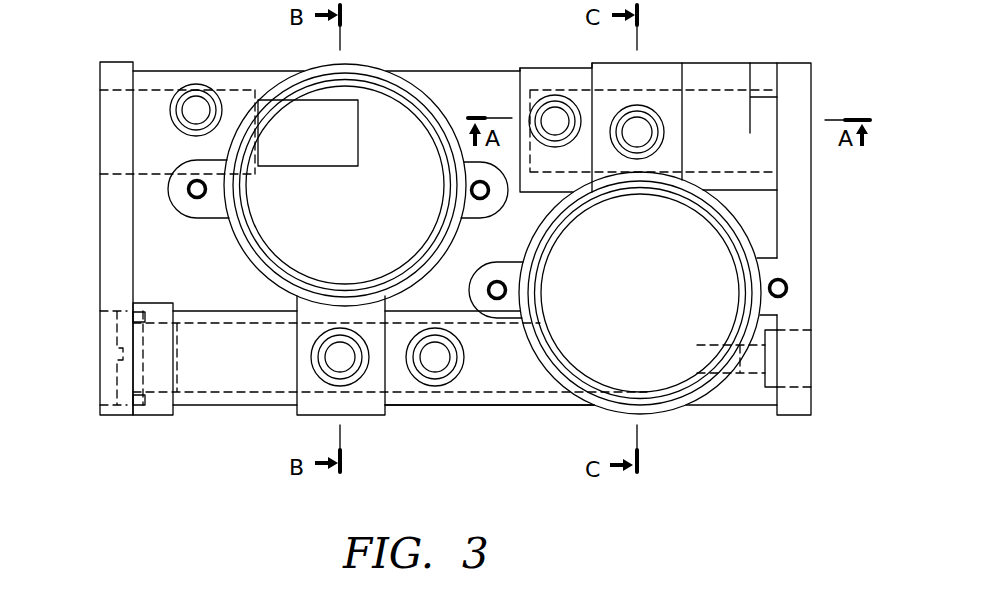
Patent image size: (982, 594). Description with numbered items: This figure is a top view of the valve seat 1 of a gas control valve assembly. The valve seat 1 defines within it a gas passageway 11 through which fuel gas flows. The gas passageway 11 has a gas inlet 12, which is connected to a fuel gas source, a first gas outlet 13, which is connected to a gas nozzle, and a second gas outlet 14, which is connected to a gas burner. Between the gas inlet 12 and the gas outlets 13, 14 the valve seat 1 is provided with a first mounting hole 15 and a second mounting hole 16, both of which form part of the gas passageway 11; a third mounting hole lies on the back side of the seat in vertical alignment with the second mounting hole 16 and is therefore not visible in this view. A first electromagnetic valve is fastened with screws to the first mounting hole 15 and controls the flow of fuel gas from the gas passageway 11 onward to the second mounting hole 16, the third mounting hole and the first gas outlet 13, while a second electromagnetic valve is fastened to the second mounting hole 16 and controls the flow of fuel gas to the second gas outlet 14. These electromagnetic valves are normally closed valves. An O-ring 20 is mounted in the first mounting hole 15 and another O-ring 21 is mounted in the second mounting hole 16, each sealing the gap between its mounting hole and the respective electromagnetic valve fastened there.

The valve seat 1 is at (456, 86).
The gas passageway 11 is at (498, 380).
The gas inlet 12 is at (115, 123).
The first gas outlet 13 is at (803, 367).
The second gas outlet 14 is at (800, 100).
The first mounting hole 15 is at (356, 203).
The second mounting hole 16 is at (651, 303).
The O-ring 20 is at (380, 87).
The O-ring 21 is at (672, 396).